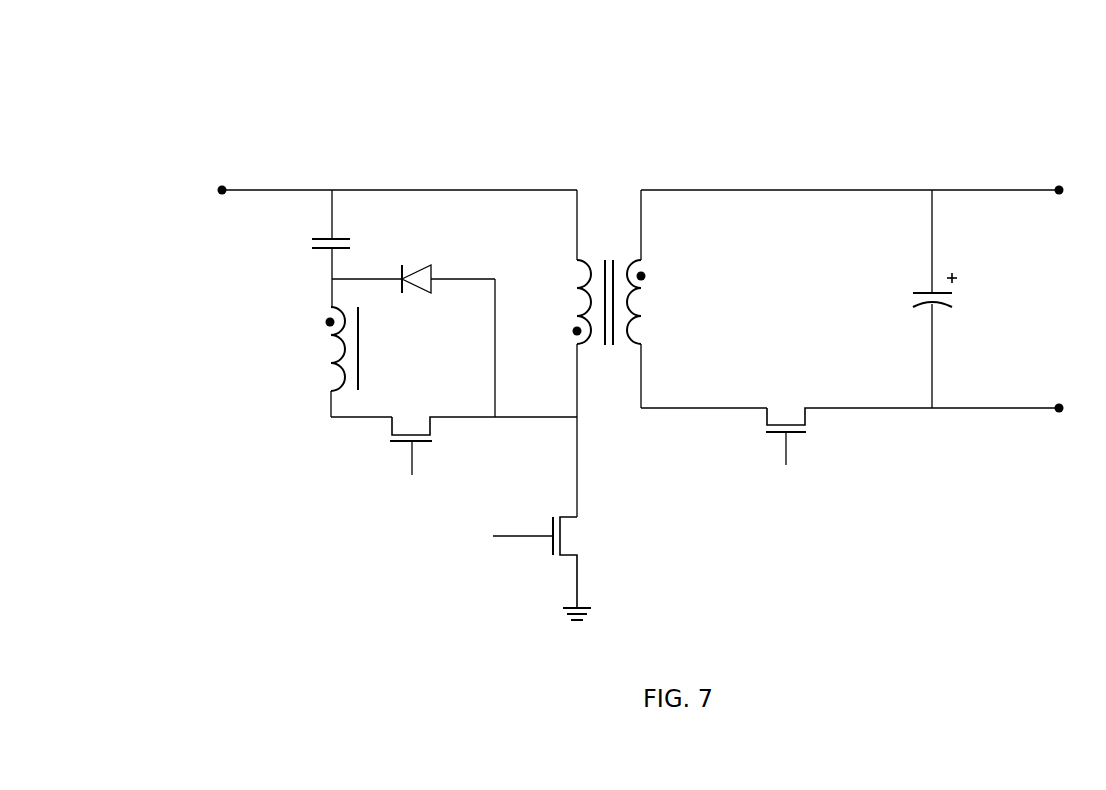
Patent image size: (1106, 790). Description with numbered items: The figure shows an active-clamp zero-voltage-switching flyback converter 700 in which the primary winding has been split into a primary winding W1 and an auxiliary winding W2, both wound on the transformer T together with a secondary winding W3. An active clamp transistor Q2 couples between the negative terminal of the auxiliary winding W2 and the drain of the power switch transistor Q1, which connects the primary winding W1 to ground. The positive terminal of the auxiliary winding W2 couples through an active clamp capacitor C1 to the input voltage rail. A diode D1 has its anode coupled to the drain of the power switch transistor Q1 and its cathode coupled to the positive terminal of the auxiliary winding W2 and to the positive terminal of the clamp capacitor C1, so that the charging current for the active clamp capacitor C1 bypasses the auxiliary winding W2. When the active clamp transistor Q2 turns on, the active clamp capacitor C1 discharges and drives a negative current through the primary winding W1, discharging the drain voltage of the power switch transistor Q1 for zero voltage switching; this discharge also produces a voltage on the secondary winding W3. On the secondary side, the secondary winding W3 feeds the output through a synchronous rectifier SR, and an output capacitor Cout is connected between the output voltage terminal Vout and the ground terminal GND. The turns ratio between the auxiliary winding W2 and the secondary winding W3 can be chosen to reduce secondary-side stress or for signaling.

The active-clamp ZVS flyback converter 700 is at (440, 88).
The active clamp capacitor C1 is at (314, 248).
The diode D1 is at (413, 324).
The auxiliary winding W2 is at (339, 362).
The active clamp transistor Q2 is at (483, 432).
The transformer T is at (610, 346).
The primary winding W1 is at (560, 353).
The secondary winding W3 is at (659, 299).
The power switch transistor Q1 is at (555, 568).
The synchronous rectifier SR is at (850, 422).
The output capacitor Cout is at (961, 299).
The output voltage Vout is at (1061, 170).
The ground GND is at (1059, 389).